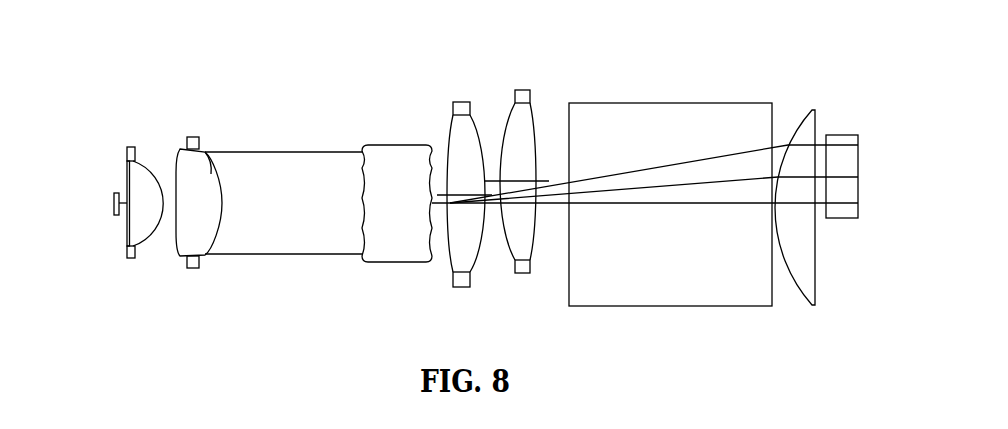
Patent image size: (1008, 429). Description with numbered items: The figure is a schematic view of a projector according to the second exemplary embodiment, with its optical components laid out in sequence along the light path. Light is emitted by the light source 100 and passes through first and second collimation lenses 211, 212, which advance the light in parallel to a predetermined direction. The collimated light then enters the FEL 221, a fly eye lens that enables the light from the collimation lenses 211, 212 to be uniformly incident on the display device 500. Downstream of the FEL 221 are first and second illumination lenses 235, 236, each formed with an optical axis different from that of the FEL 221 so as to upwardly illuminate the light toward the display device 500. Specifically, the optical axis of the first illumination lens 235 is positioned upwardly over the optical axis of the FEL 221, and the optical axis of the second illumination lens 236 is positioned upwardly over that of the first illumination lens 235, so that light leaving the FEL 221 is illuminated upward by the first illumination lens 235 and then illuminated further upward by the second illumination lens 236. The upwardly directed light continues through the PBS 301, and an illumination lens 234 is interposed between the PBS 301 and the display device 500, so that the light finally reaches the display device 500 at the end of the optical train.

The light source 100 is at (117, 192).
The first collimation lens 211 is at (147, 173).
The second collimation lens 212 is at (210, 172).
The FEL (Fly Eye Lens) 221 is at (387, 165).
The first illumination lens 235 is at (472, 142).
The second illumination lens 236 is at (527, 123).
The PBS 301 is at (678, 115).
The illumination lens 234 is at (808, 118).
The display device 500 is at (850, 140).